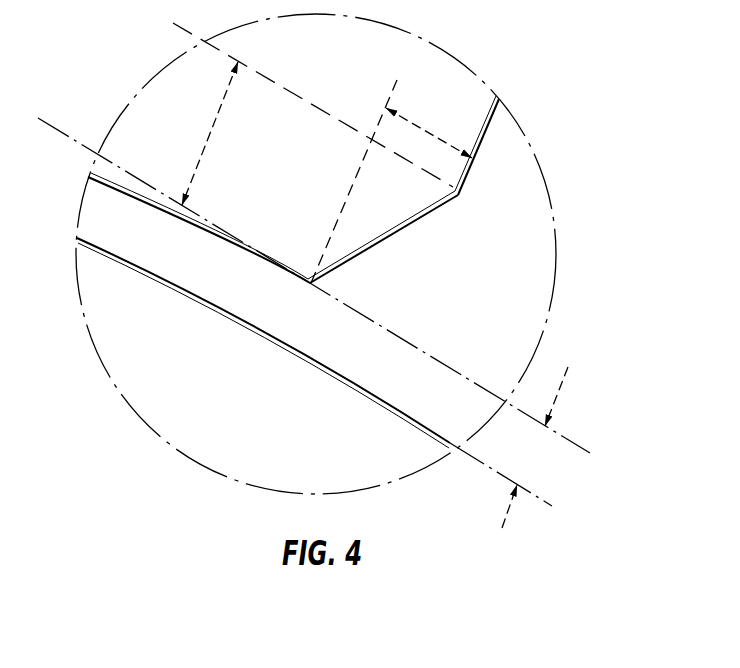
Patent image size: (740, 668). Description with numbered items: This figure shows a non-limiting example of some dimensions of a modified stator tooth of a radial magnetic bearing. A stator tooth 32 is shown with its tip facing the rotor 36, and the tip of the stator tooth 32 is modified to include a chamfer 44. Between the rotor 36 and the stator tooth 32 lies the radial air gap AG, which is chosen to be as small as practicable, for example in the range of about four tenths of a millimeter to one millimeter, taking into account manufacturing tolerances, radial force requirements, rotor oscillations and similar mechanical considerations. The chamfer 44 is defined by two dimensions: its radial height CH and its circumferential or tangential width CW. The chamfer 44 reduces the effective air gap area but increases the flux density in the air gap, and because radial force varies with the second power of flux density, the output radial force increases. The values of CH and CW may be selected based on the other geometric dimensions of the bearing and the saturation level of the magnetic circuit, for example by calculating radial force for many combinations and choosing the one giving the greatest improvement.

The stator tooth 32 is at (487, 128).
The chamfer 44 is at (397, 232).
The rotor 36 is at (224, 396).
The chamfer circumferential width CW is at (430, 133).
The chamfer radial height CH is at (338, 217).
The radial air gap AG is at (559, 390).